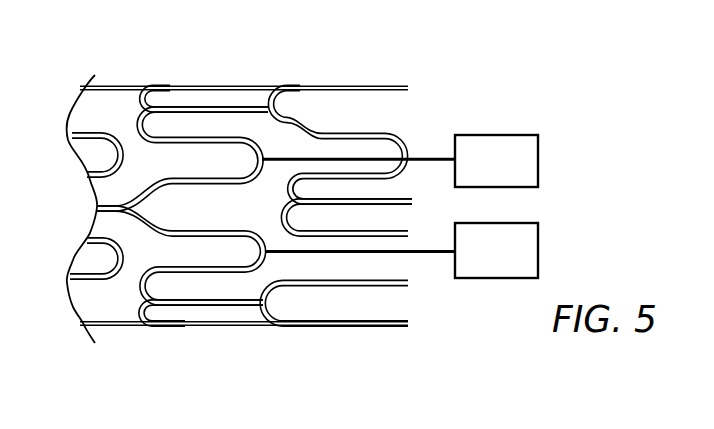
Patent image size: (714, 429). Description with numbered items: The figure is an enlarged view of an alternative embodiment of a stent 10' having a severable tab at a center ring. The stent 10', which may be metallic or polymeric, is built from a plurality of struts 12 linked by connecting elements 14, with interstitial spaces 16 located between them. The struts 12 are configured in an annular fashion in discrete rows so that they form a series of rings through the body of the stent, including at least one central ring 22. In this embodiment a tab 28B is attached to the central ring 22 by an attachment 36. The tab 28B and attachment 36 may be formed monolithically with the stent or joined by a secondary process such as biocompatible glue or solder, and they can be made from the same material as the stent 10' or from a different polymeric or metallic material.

The stent 10' is at (301, 196).
The struts 12 is at (245, 141).
The connecting elements 14 is at (202, 104).
The interstitial spaces 16 is at (325, 113).
The central ring 22 is at (168, 325).
The tab 28B is at (498, 134).
The attachment 36 is at (431, 163).